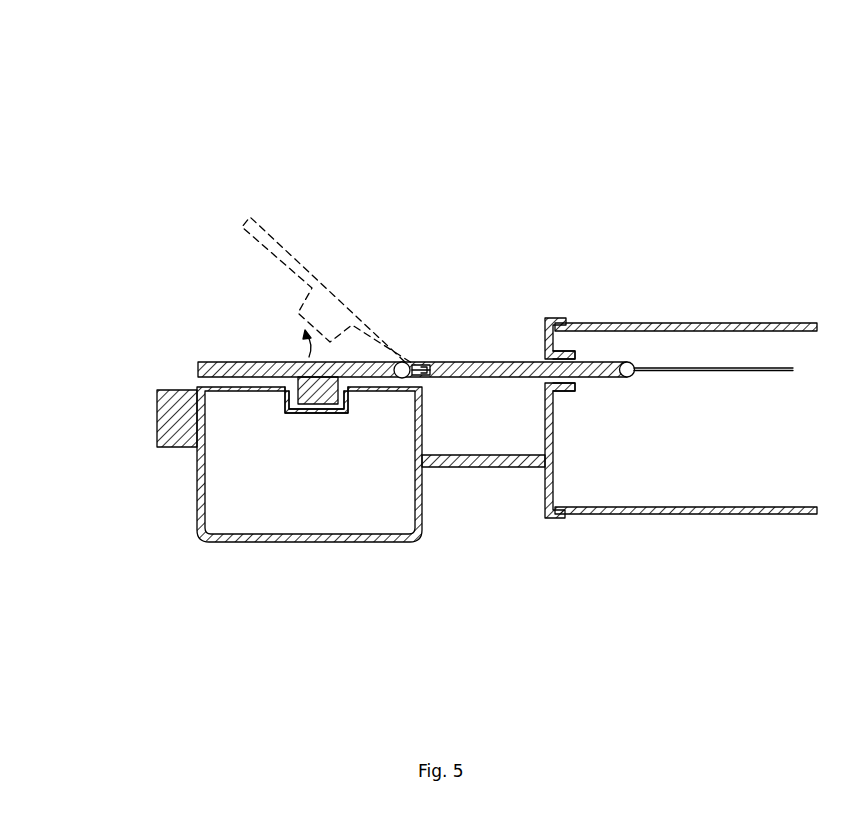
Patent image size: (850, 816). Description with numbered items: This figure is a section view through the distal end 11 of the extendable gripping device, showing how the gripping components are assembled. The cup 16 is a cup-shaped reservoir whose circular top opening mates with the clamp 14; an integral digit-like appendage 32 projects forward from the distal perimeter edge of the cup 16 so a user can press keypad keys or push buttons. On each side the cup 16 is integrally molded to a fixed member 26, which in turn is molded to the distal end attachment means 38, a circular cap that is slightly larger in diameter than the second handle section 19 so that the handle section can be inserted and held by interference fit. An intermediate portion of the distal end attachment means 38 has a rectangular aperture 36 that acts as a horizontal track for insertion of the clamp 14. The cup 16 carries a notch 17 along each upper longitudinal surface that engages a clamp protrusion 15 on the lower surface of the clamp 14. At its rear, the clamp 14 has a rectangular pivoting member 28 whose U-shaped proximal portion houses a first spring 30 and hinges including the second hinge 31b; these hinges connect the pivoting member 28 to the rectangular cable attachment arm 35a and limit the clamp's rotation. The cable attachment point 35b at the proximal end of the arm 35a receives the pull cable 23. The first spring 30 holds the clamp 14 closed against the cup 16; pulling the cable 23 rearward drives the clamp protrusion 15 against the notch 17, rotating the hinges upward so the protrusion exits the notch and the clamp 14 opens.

The distal end 11 is at (198, 136).
The clamp 14 is at (225, 368).
The clamp protrusion 15 is at (298, 405).
The cup 16 is at (242, 537).
The notch 17 is at (320, 413).
The second handle section 19 is at (672, 327).
The pull cable 23 is at (742, 368).
The fixed member 26 is at (468, 467).
The pivoting member 28 is at (413, 360).
The first spring 30 is at (400, 365).
The second hinge 31b is at (420, 363).
The appendage 32 is at (160, 444).
The cable attachment arm 35a is at (480, 365).
The cable attachment point 35b is at (627, 377).
The rectangular aperture 36 is at (568, 383).
The distal end attachment means 38 is at (549, 317).